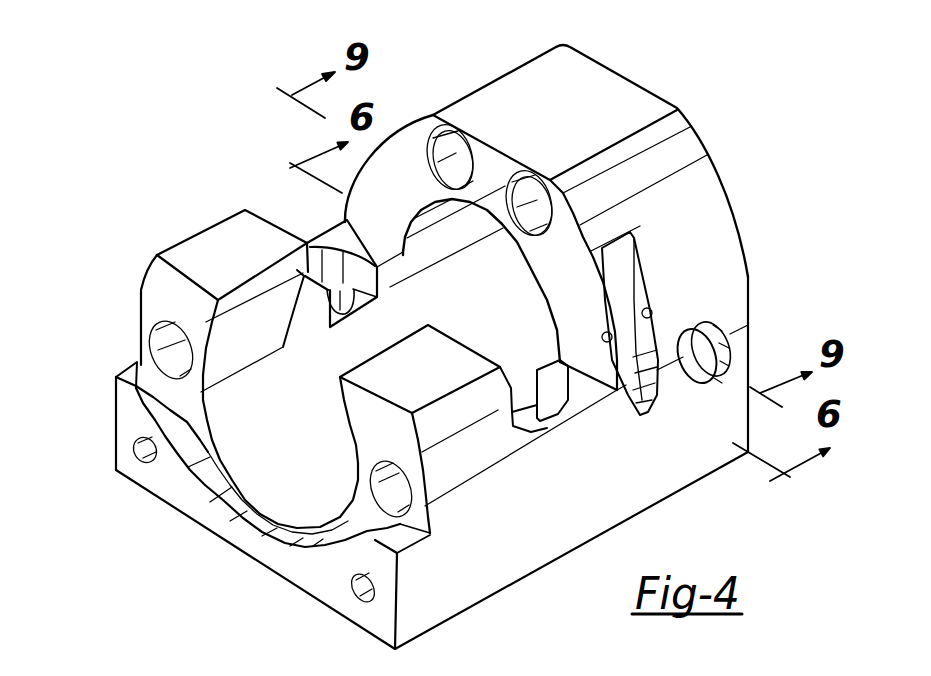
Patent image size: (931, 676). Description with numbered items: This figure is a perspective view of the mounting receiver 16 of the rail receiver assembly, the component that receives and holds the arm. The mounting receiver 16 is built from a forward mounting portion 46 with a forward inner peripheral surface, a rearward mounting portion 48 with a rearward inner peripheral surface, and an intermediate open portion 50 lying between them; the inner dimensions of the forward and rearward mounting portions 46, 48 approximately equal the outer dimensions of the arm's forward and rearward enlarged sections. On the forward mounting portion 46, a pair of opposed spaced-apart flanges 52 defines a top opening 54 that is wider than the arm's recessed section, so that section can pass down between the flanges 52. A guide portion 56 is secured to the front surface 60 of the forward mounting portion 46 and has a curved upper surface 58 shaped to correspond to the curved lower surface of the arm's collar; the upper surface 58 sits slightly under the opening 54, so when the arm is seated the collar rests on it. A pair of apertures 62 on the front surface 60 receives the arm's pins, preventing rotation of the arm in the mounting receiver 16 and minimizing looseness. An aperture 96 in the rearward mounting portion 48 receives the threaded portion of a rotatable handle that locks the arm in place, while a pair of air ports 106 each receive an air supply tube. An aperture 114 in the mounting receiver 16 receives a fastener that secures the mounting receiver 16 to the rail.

The mounting receiver 16 is at (663, 68).
The forward mounting portion 46 is at (203, 228).
The rearward mounting portion 48 is at (718, 208).
The intermediate open portion 50 is at (600, 412).
The flanges 52 is at (220, 224).
The top opening 54 is at (283, 500).
The guide portion 56 is at (177, 495).
The curved upper surface 58 is at (166, 411).
The front surface 60 is at (158, 293).
The apertures 62 is at (157, 347).
The aperture 96 is at (720, 352).
The air ports 106 is at (440, 140).
The aperture 114 is at (525, 405).